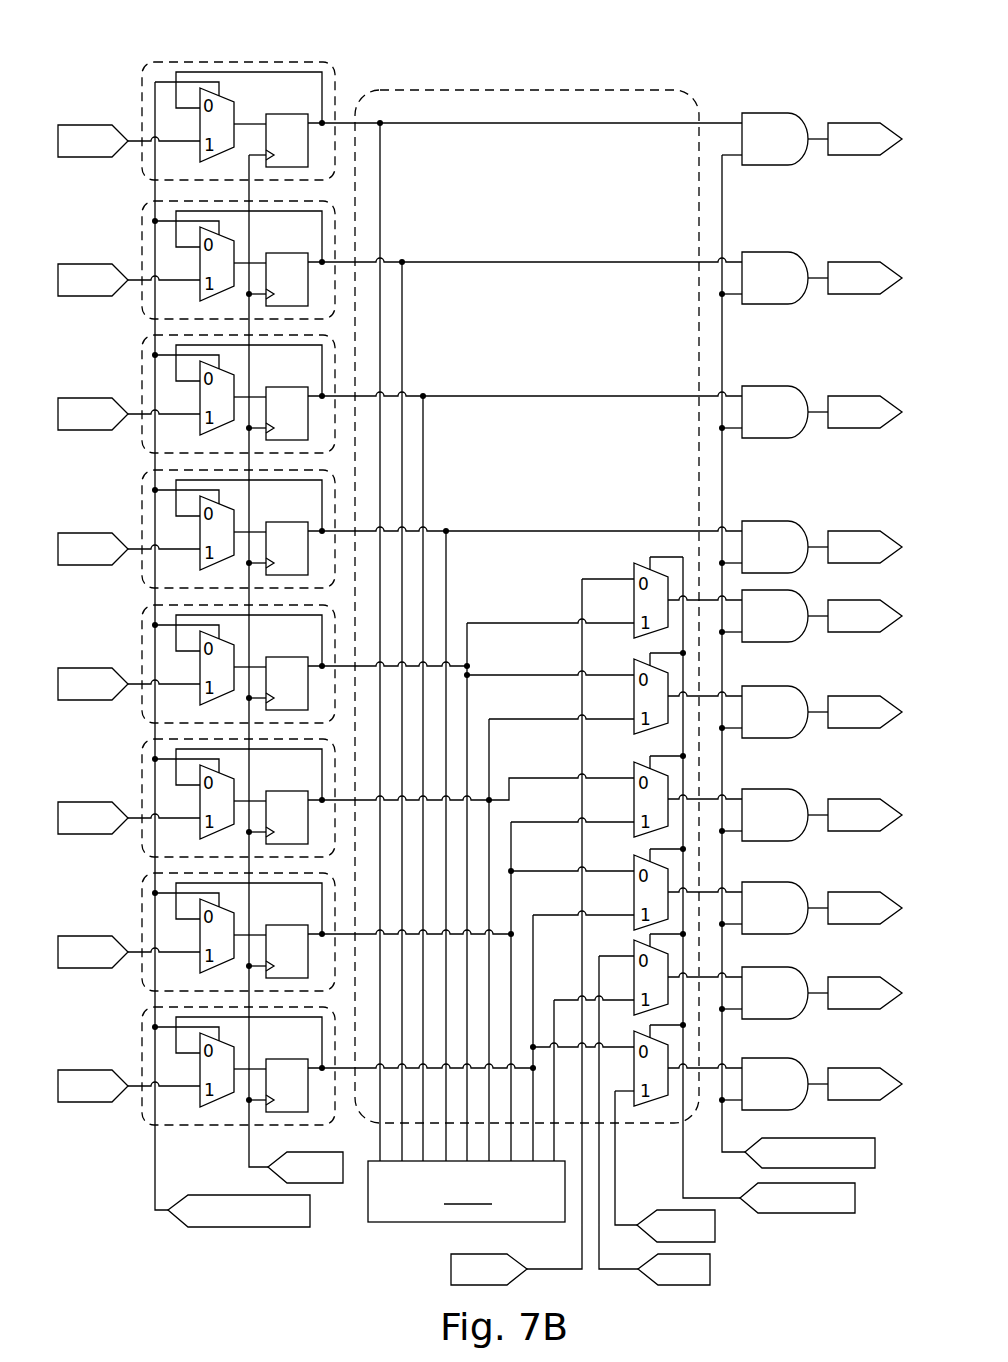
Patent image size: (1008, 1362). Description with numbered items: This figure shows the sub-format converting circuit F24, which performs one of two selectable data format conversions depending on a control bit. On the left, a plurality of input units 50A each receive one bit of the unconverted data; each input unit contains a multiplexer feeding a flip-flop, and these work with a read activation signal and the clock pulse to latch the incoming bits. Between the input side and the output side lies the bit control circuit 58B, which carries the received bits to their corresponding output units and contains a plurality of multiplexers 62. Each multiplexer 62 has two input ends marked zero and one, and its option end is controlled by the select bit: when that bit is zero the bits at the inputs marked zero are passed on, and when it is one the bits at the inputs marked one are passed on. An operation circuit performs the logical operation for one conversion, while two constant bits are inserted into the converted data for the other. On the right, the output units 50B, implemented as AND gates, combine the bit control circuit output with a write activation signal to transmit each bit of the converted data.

The sub-format converting circuit F24 is at (712, 71).
The input units 50A is at (238, 60).
The bit control circuit 58B is at (502, 90).
The multiplexer 62 is at (632, 568).
The output units 50B is at (757, 112).